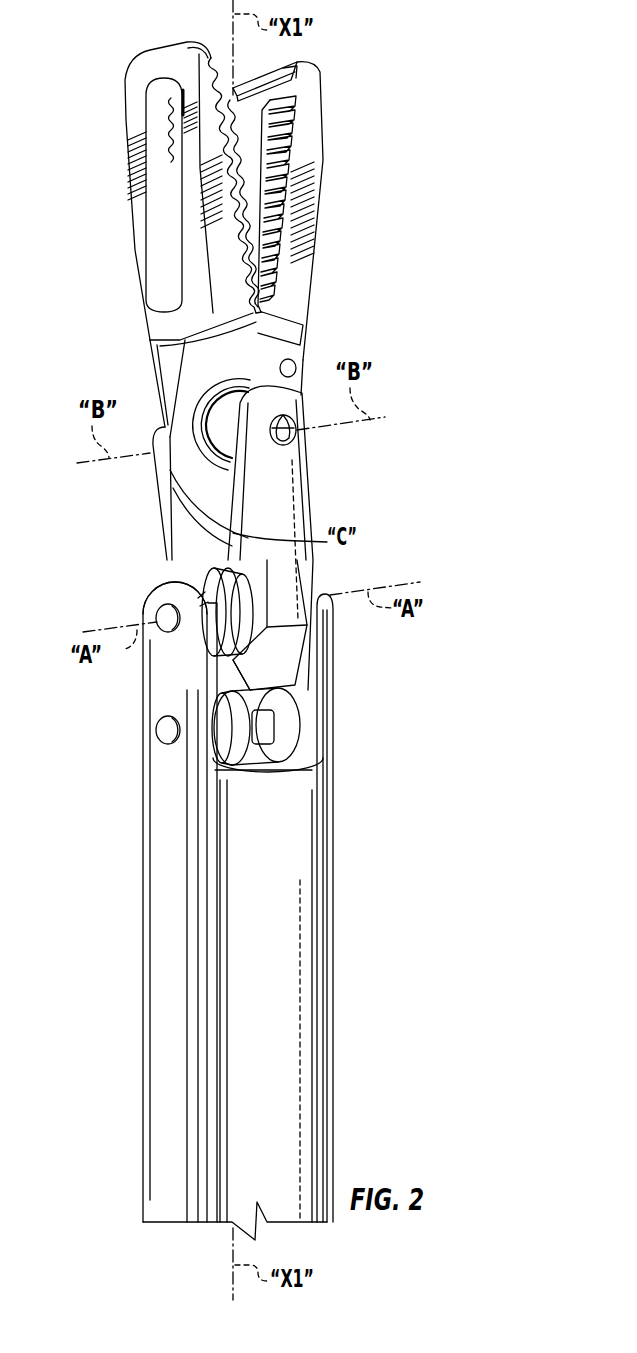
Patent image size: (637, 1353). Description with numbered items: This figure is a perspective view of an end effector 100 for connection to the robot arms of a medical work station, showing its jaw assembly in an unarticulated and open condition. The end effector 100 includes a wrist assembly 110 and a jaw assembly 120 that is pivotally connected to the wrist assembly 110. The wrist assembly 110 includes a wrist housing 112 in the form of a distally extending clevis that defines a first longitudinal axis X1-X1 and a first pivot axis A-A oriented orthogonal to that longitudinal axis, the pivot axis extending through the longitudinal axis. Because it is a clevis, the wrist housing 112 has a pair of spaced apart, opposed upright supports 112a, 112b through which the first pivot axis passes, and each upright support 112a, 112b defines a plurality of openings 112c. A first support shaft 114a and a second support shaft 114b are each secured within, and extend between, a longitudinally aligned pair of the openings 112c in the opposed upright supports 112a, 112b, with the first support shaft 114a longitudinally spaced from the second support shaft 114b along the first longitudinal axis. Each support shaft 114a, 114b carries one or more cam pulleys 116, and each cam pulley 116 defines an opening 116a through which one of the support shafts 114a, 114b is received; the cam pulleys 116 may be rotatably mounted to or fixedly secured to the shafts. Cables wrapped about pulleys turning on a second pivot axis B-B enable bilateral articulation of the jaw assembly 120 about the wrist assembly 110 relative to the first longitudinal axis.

The end effector 100 is at (404, 170).
The wrist assembly 110 is at (327, 852).
The wrist housing 112 is at (327, 1085).
The upright support 112a is at (147, 705).
The upright support 112b is at (334, 661).
The openings 112c is at (164, 637).
The first support shaft 114a is at (157, 735).
The second support shaft 114b is at (157, 612).
The cam pulley 116 is at (217, 552).
The opening 116a is at (273, 720).
The jaw assembly 120 is at (312, 508).